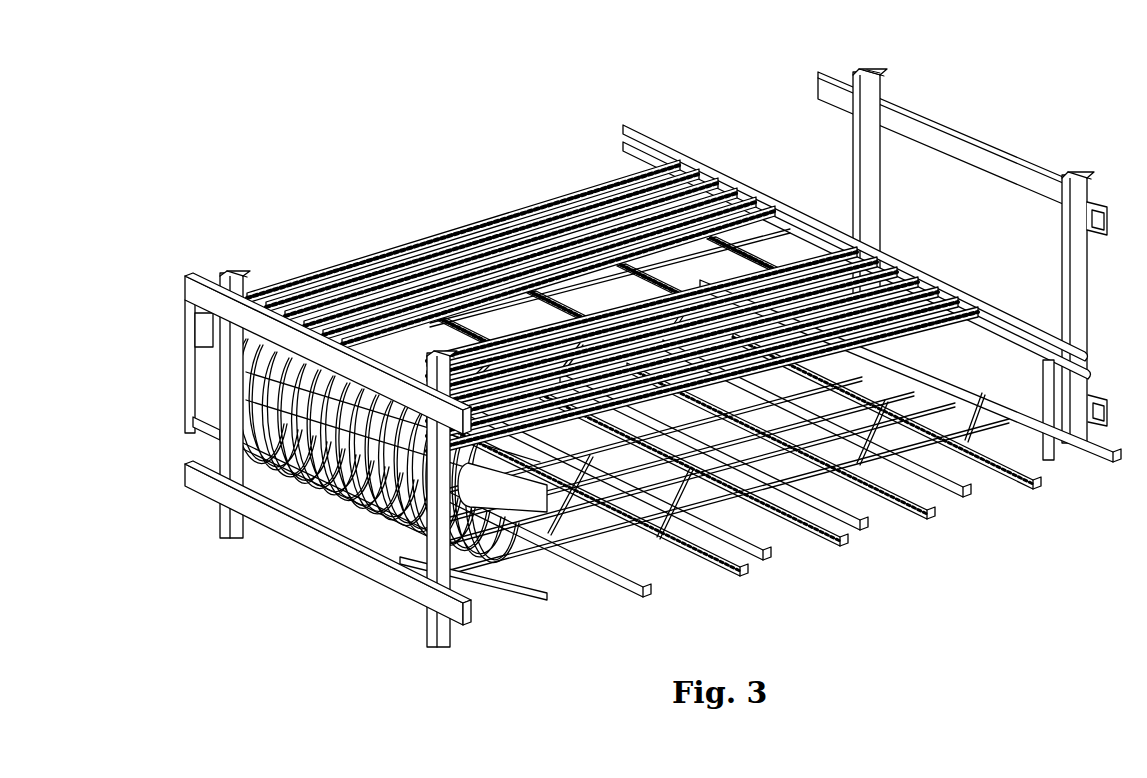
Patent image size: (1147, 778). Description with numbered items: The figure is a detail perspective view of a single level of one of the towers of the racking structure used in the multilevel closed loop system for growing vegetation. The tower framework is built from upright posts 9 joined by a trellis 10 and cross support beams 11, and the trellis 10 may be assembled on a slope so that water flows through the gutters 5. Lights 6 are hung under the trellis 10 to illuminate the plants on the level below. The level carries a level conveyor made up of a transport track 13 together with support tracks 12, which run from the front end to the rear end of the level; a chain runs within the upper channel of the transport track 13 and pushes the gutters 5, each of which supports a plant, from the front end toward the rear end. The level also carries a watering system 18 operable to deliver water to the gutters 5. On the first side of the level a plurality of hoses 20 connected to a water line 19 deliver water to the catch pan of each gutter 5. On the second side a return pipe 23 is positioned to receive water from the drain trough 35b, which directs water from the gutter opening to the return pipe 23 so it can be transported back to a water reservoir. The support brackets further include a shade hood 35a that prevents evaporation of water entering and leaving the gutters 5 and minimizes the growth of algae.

The gutter 5 is at (374, 254).
The lights 6 is at (965, 496).
The post 9 is at (873, 82).
The trellis 10 is at (672, 543).
The cross support beam 11 is at (197, 273).
The support track 12 is at (737, 577).
The transport track 13 is at (829, 538).
The watering system 18 is at (555, 566).
The water line 19 is at (540, 594).
The hoses 20 is at (527, 540).
The return pipe 23 is at (1052, 458).
The shade hood 35a is at (1090, 357).
The drain trough 35b is at (1091, 378).